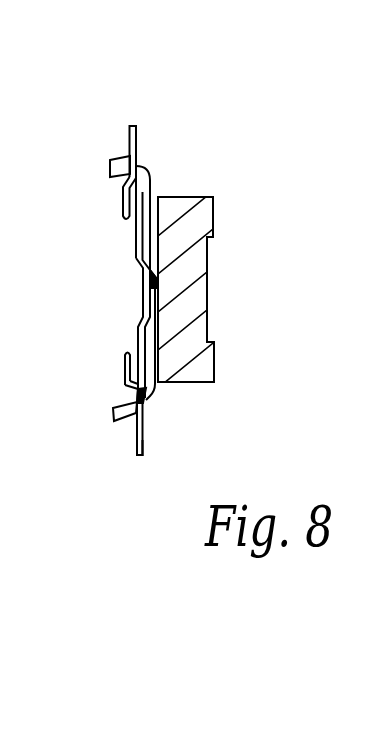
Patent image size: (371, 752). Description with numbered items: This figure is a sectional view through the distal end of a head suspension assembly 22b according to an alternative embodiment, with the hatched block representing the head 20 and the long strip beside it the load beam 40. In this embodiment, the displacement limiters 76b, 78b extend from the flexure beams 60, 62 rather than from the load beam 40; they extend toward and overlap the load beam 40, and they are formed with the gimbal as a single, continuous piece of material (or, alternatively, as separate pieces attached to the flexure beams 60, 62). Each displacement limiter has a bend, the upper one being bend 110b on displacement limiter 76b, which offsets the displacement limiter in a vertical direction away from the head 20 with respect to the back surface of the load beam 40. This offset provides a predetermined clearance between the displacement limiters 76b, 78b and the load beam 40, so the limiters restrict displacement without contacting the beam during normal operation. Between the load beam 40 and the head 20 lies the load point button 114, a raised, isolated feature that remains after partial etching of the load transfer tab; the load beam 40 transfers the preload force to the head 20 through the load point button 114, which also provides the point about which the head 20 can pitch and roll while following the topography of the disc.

The head 20 is at (214, 206).
The head suspension assembly 22b is at (222, 106).
The load beam 40 is at (150, 189).
The flexure beam 60 is at (128, 127).
The flexure beam 62 is at (136, 442).
The displacement limiter 76b is at (123, 200).
The displacement limiter 78b is at (125, 357).
The bend 110b is at (110, 174).
The load point button 114 is at (153, 272).